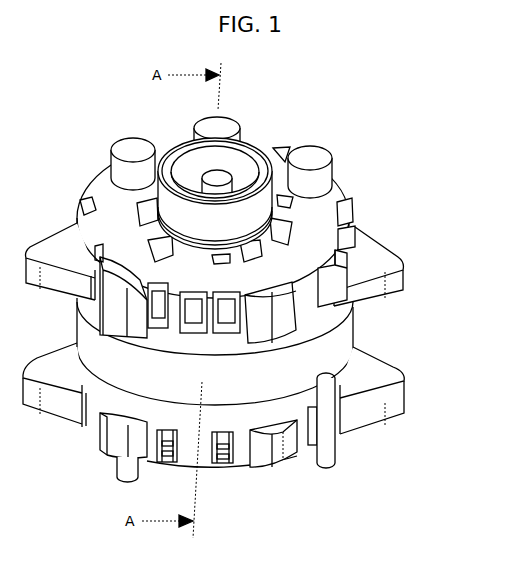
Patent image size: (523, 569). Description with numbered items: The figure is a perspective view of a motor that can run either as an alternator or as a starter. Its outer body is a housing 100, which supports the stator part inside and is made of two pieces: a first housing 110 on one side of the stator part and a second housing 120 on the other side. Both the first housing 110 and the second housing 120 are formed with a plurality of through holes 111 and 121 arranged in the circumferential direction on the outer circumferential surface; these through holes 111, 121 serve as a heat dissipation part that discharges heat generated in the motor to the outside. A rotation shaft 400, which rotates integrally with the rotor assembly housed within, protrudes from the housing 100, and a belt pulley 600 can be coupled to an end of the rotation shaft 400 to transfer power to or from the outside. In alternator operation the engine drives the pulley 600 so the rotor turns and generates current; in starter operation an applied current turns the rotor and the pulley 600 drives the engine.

The housing 100 is at (254, 332).
The first housing 110 is at (236, 250).
The through holes 111 is at (348, 206).
The second housing 120 is at (234, 404).
The through holes 121 is at (220, 467).
The rotation shaft 400 is at (221, 180).
The pulley 600 is at (162, 135).